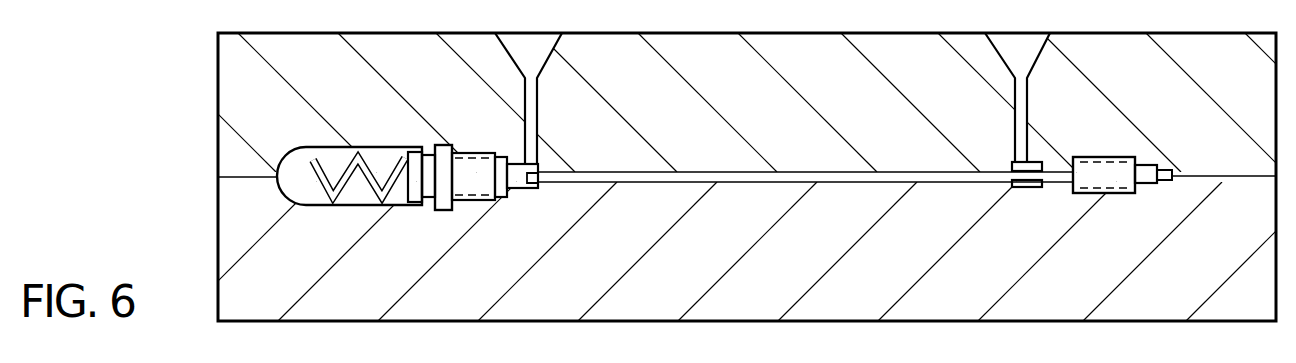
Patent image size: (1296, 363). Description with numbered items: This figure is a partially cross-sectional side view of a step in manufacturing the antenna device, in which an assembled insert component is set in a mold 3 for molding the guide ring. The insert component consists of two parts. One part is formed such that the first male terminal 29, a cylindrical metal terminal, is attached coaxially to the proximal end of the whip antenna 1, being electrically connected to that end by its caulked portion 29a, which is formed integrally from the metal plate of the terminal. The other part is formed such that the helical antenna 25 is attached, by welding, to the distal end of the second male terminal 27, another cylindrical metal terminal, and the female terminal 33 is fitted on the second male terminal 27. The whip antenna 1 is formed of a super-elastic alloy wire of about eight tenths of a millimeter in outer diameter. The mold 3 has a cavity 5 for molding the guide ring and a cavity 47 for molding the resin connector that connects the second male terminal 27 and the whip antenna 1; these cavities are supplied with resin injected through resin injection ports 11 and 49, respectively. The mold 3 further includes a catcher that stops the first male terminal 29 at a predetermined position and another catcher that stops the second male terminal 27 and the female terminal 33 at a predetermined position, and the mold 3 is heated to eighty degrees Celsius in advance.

The whip antenna 1 is at (690, 177).
The mold 3 is at (235, 197).
The cavity 5 is at (1032, 188).
The resin injection port 11 is at (1028, 52).
The helical antenna 25 is at (317, 158).
The second male terminal 27 is at (498, 153).
The first male terminal 29 is at (1100, 168).
The caulked portion 29a is at (1150, 172).
The female terminal 33 is at (470, 190).
The cavity 47 is at (520, 186).
The resin injection port 49 is at (554, 47).